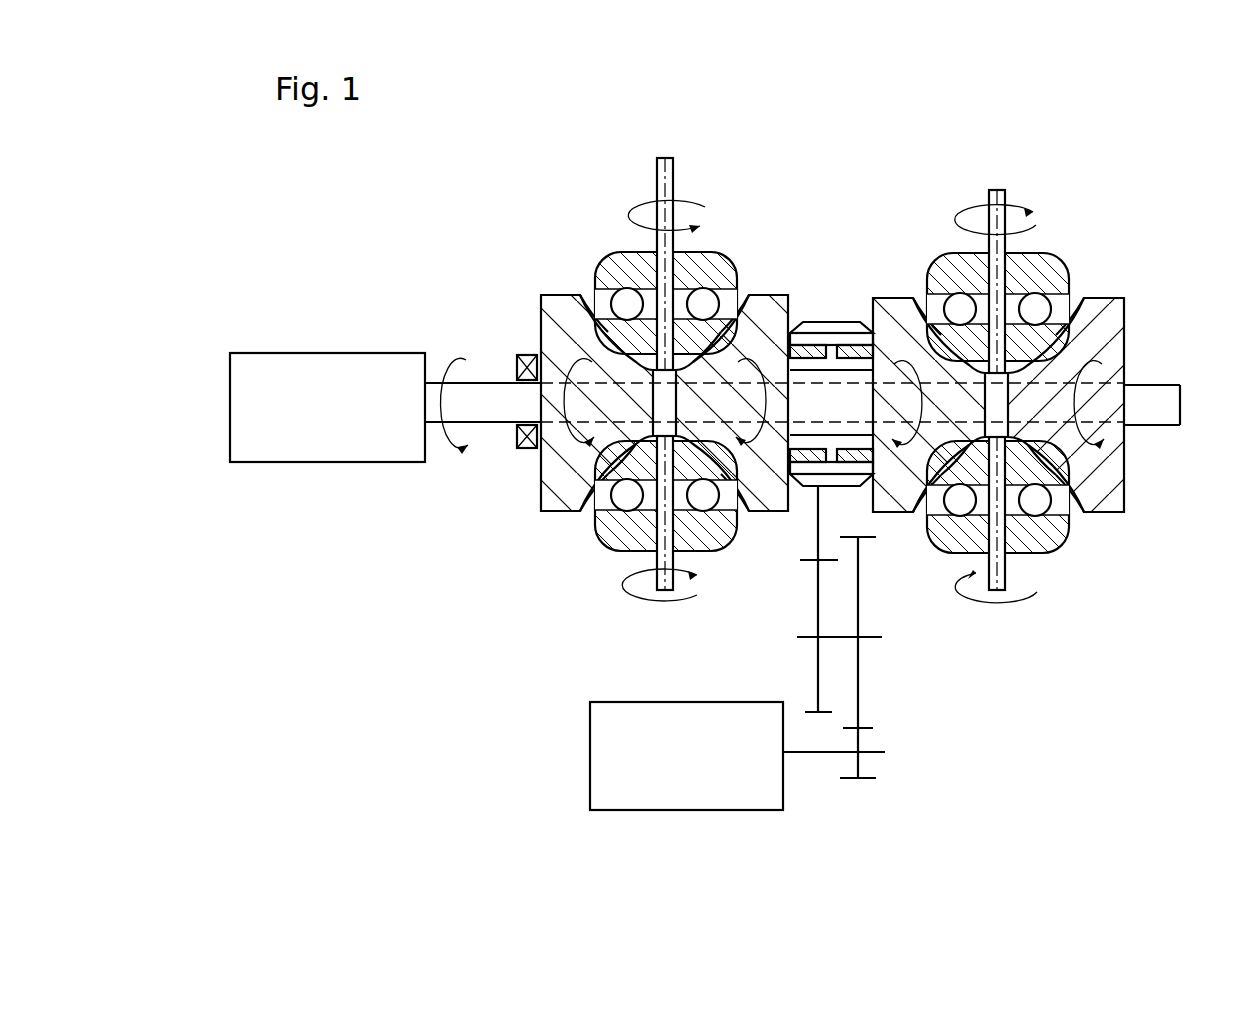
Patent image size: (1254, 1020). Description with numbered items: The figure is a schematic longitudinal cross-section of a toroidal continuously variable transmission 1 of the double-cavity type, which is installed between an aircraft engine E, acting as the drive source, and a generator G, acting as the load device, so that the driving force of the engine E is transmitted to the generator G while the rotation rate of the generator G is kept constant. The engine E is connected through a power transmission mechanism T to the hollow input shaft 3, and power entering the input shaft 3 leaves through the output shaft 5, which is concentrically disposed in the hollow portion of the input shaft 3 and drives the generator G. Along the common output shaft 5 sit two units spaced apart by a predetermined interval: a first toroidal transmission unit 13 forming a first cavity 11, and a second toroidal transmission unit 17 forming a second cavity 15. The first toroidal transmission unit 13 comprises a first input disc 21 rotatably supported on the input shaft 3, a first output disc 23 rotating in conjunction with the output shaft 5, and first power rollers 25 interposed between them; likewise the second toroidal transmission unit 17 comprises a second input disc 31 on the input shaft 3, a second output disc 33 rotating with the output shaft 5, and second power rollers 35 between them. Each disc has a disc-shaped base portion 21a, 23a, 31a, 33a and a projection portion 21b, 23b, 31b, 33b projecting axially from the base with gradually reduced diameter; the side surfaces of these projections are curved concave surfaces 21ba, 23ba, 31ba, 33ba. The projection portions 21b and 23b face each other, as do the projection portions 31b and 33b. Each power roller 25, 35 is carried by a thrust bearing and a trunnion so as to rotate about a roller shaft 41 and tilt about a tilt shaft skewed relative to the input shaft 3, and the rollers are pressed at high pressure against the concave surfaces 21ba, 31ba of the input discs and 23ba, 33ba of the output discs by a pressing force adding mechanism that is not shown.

The toroidal continuously variable transmission 1 is at (512, 200).
The input shaft 3 is at (830, 330).
The output shaft 5 is at (486, 394).
The first cavity 11 is at (789, 396).
The first toroidal transmission unit 13 is at (789, 396).
The second cavity 15 is at (1041, 434).
The second toroidal transmission unit 17 is at (1041, 434).
The first input disc 21 is at (772, 508).
The base portion 21a is at (760, 298).
The projection portion 21b is at (688, 366).
The concave surface 21ba is at (737, 433).
The first output disc 23 is at (543, 508).
The base portion 23a is at (575, 298).
The projection portion 23b is at (645, 432).
The concave surface 23ba is at (578, 505).
The first power roller 25 is at (615, 270).
The second input disc 31 is at (897, 500).
The base portion 31a is at (892, 297).
The projection portion 31b is at (948, 550).
The concave surface 31ba is at (922, 505).
The second output disc 33 is at (1110, 505).
The base portion 33a is at (1110, 292).
The projection portion 33b is at (1030, 500).
The concave surface 33ba is at (1068, 505).
The second power roller 35 is at (1055, 275).
The roller shaft 41 is at (657, 165).
The generator G is at (326, 368).
The engine E is at (612, 750).
The power transmission mechanism T is at (872, 640).